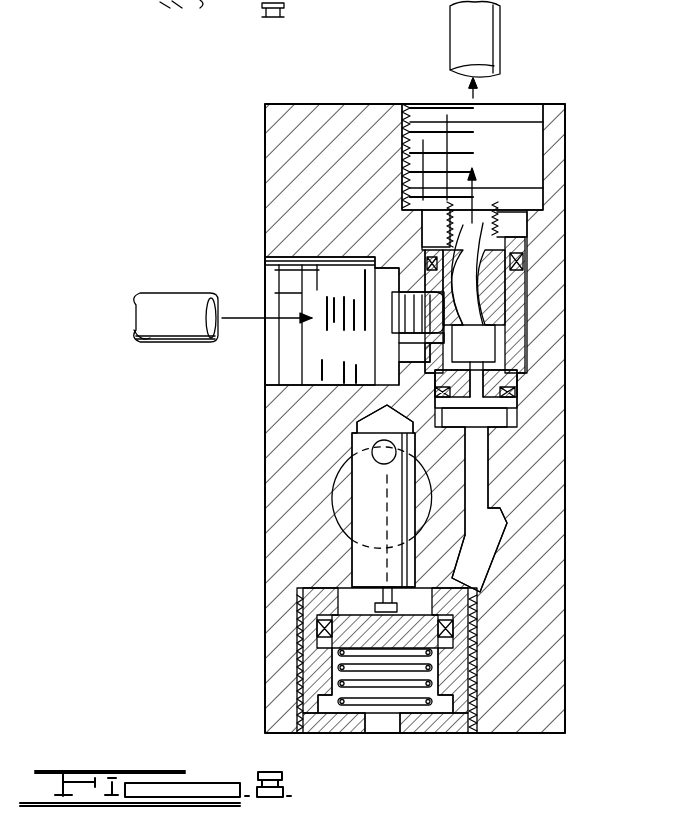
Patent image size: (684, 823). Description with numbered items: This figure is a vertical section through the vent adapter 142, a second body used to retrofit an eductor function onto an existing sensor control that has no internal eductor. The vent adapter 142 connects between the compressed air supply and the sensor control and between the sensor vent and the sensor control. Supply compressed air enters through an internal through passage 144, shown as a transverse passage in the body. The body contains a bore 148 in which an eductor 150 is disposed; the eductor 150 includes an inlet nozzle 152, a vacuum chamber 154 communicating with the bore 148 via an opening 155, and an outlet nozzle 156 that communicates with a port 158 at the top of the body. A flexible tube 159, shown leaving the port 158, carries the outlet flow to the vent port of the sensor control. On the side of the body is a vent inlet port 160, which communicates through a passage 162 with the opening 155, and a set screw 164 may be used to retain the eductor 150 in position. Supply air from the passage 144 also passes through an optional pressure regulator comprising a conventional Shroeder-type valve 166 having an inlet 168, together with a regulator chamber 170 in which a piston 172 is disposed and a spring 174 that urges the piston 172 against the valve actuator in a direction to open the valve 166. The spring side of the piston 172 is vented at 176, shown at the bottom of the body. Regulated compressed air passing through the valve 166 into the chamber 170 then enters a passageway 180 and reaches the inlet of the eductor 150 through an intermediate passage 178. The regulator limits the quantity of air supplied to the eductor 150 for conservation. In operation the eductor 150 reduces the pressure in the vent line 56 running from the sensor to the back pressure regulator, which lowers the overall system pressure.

The vent line 56 is at (180, 302).
The vent adapter 142 is at (283, 466).
The internal through passage 144 is at (341, 477).
The bore 148 is at (525, 341).
The eductor 150 is at (395, 290).
The inlet nozzle 152 is at (513, 392).
The vacuum chamber 154 is at (505, 318).
The opening 155 is at (486, 345).
The outlet nozzle 156 is at (497, 234).
The port 158 is at (525, 108).
The flexible tube 159 is at (493, 35).
The vent inlet port 160 is at (285, 366).
The passage 162 is at (410, 356).
The set screw 164 is at (420, 312).
The Shroeder-type valve 166 is at (370, 505).
The inlet 168 is at (376, 447).
The regulator chamber 170 is at (309, 574).
The piston 172 is at (314, 664).
The spring 174 is at (353, 700).
The vent 176 is at (400, 727).
The intermediate passage 178 is at (493, 548).
The passageway 180 is at (488, 460).